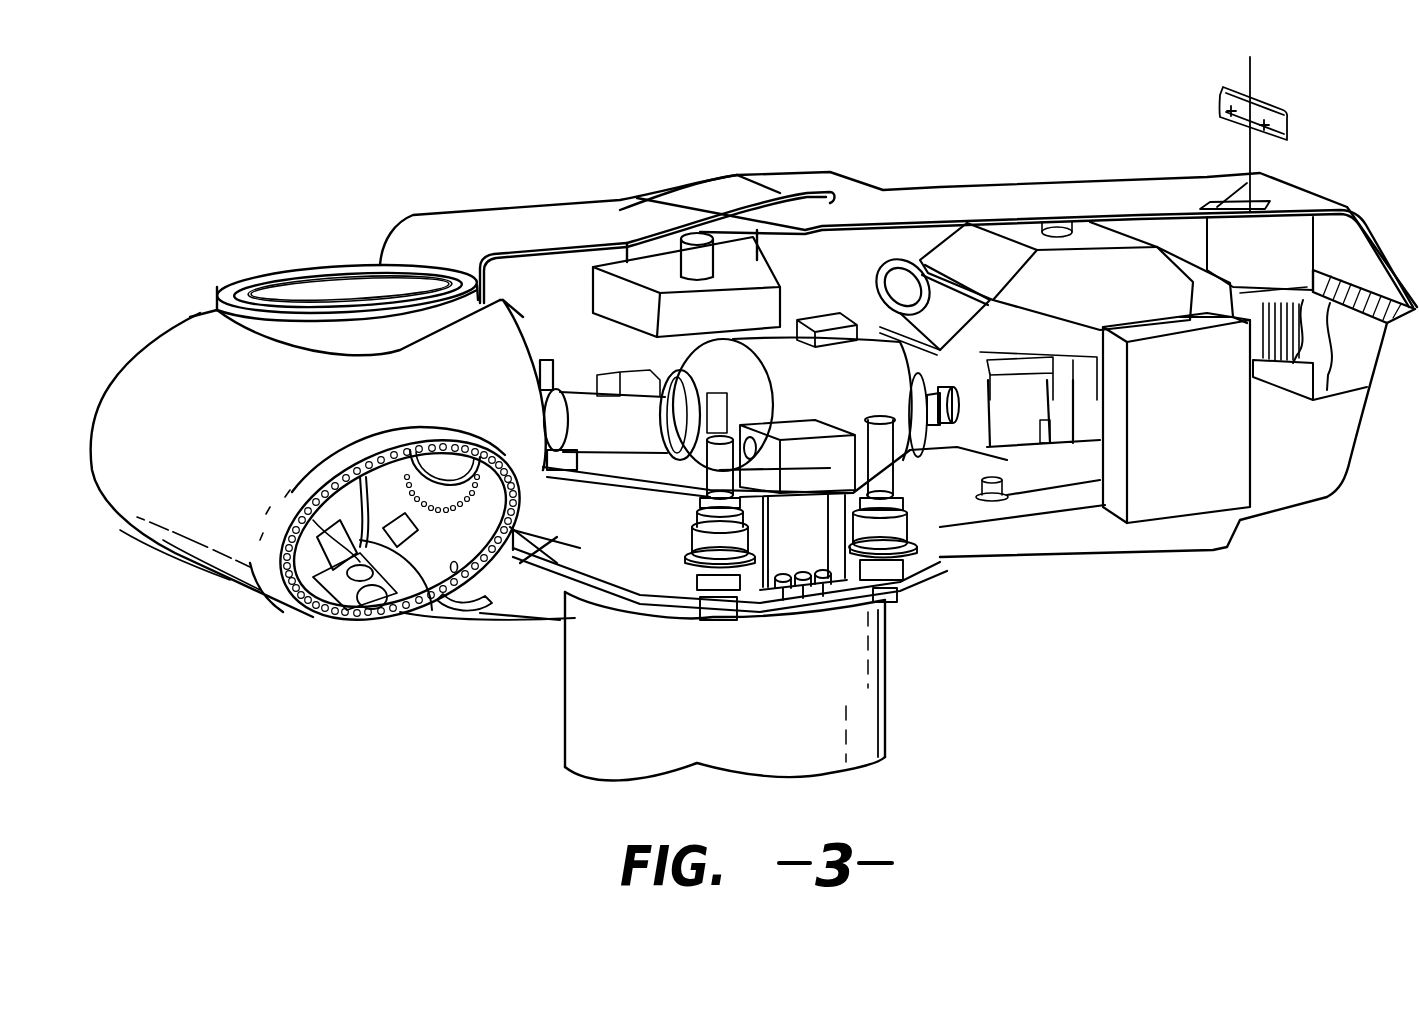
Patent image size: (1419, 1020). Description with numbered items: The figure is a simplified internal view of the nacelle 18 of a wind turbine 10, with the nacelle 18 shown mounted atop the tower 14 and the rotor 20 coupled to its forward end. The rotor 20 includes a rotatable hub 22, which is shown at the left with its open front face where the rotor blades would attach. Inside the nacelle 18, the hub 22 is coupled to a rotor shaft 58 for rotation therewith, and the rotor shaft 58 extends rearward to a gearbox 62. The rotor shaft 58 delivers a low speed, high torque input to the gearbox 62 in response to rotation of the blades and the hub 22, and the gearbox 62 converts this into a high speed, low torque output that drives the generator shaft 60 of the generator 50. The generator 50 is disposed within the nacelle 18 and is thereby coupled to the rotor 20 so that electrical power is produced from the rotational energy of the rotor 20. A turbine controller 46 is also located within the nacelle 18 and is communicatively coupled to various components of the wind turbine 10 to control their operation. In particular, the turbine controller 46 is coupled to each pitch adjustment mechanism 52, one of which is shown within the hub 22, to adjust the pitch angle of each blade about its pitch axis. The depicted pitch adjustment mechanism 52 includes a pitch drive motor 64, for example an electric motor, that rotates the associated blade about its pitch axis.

The wind turbine 10 is at (222, 185).
The tower 14 is at (563, 700).
The nacelle 18 is at (574, 195).
The rotor 20 is at (128, 348).
The hub 22 is at (150, 487).
The turbine controller 46 is at (1167, 497).
The generator 50 is at (1037, 292).
The pitch adjustment mechanism 52 is at (350, 606).
The rotor shaft 58 is at (585, 423).
The generator shaft 60 is at (957, 400).
The gearbox 62 is at (807, 380).
The pitch drive motor 64 is at (438, 585).